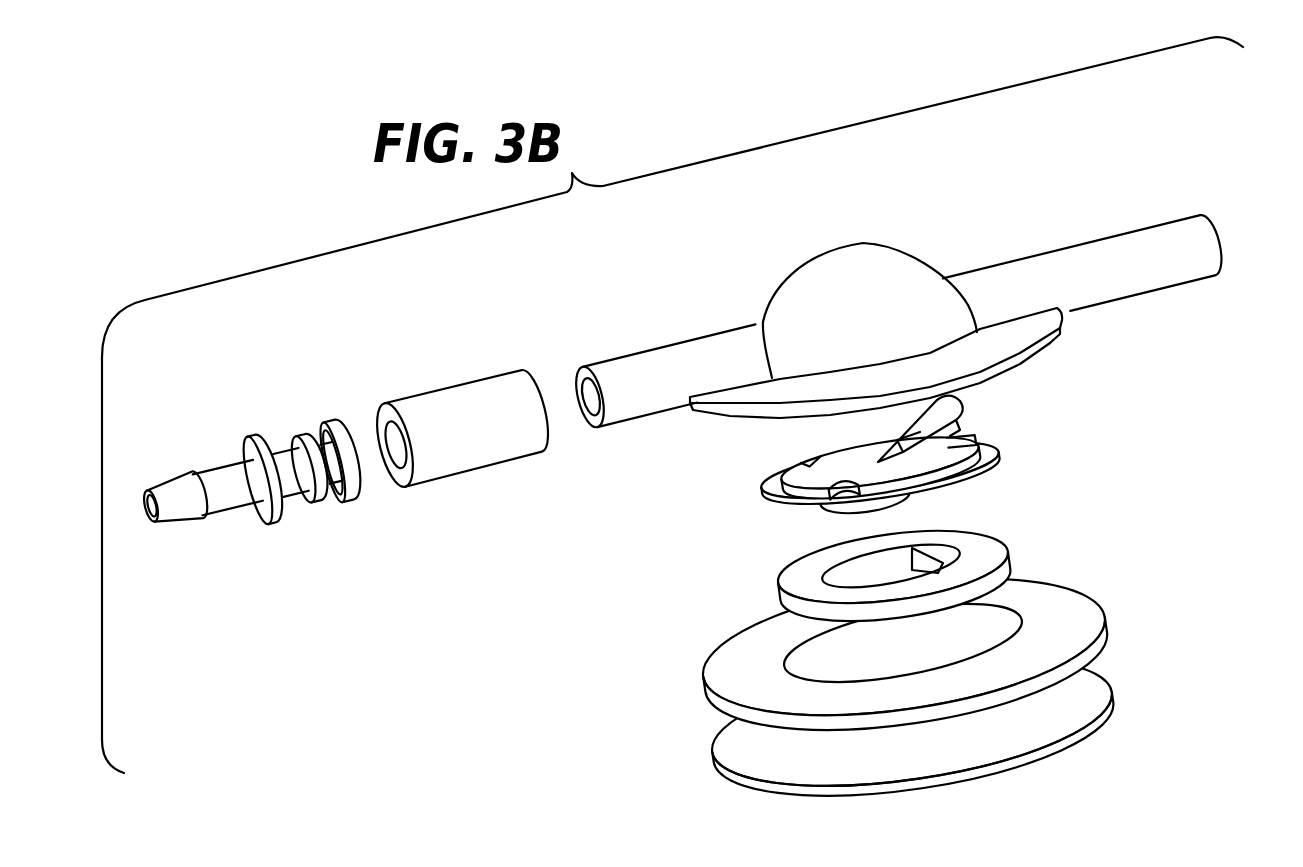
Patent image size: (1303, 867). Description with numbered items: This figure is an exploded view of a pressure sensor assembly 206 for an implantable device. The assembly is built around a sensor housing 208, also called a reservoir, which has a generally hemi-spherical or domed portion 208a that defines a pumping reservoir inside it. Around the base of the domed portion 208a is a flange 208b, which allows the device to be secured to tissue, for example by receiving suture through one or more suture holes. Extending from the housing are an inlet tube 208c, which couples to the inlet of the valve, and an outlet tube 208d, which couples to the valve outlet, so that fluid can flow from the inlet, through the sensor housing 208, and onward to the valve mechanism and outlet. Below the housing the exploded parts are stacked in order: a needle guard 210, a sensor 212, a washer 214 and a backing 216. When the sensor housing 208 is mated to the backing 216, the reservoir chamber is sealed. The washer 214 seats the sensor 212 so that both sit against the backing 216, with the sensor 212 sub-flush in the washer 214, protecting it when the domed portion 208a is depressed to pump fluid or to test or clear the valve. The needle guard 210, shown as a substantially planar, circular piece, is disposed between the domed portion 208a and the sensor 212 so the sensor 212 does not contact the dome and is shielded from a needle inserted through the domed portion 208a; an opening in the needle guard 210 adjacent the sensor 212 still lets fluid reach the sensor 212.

The pressure sensor assembly 206 is at (1121, 158).
The sensor housing 208 is at (926, 333).
The domed portion 208a is at (806, 297).
The flange 208b is at (776, 392).
The inlet tube 208c is at (623, 403).
The outlet tube 208d is at (1168, 265).
The needle guard 210 is at (991, 443).
The sensor 212 is at (972, 550).
The washer 214 is at (1048, 623).
The backing 216 is at (1016, 724).